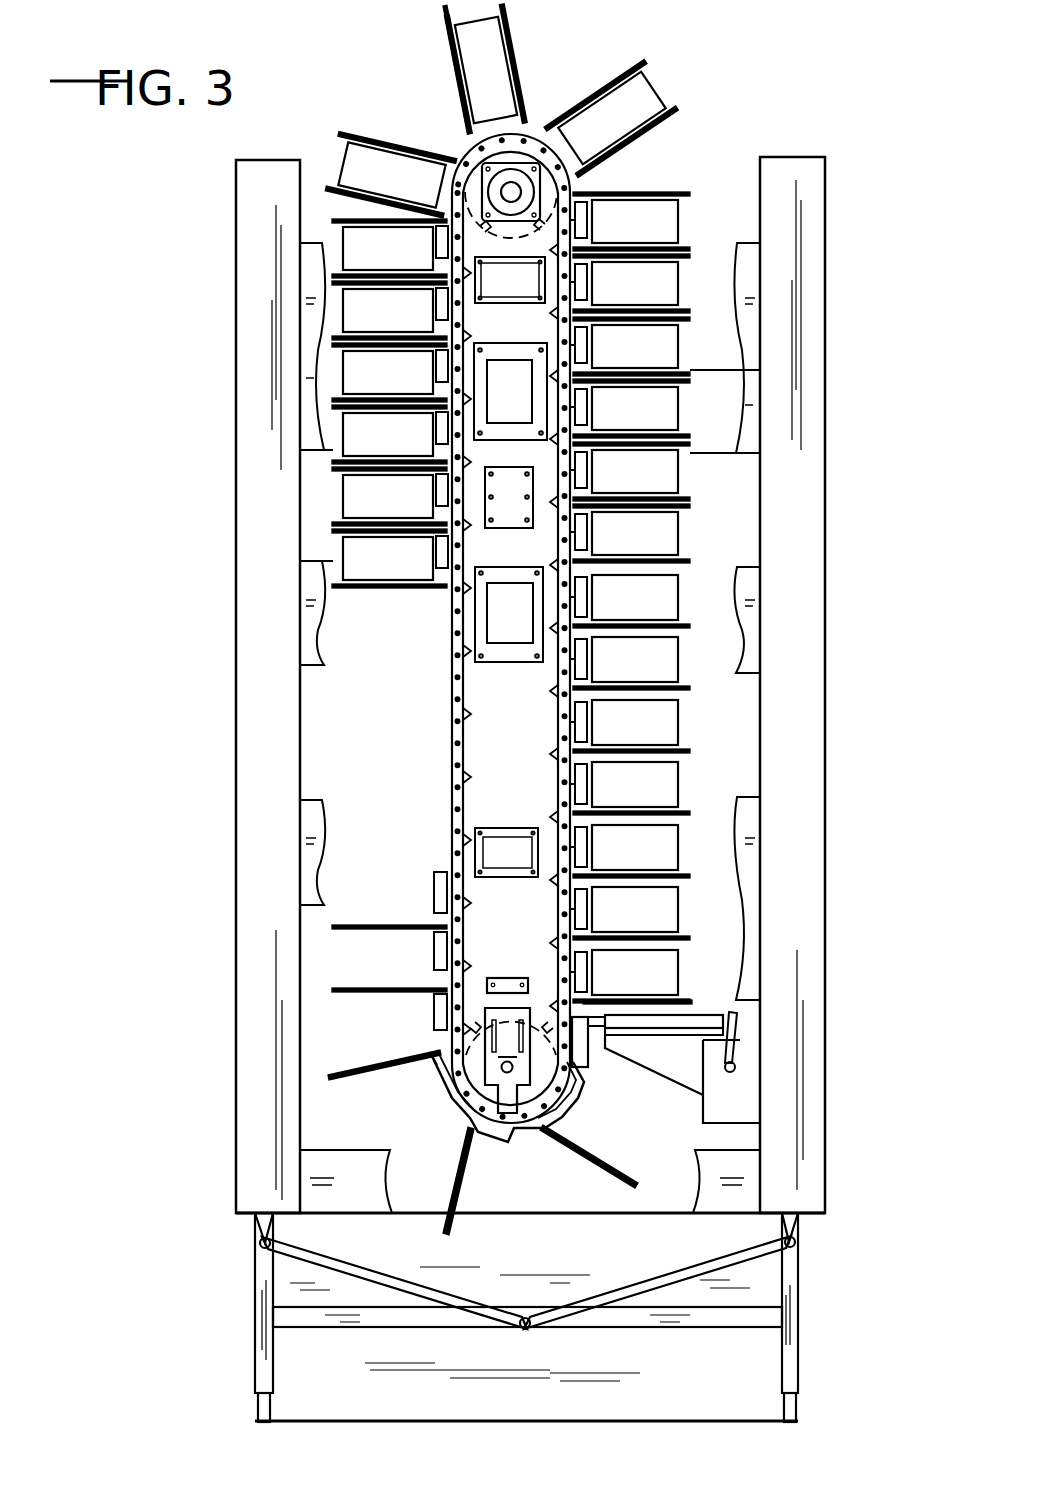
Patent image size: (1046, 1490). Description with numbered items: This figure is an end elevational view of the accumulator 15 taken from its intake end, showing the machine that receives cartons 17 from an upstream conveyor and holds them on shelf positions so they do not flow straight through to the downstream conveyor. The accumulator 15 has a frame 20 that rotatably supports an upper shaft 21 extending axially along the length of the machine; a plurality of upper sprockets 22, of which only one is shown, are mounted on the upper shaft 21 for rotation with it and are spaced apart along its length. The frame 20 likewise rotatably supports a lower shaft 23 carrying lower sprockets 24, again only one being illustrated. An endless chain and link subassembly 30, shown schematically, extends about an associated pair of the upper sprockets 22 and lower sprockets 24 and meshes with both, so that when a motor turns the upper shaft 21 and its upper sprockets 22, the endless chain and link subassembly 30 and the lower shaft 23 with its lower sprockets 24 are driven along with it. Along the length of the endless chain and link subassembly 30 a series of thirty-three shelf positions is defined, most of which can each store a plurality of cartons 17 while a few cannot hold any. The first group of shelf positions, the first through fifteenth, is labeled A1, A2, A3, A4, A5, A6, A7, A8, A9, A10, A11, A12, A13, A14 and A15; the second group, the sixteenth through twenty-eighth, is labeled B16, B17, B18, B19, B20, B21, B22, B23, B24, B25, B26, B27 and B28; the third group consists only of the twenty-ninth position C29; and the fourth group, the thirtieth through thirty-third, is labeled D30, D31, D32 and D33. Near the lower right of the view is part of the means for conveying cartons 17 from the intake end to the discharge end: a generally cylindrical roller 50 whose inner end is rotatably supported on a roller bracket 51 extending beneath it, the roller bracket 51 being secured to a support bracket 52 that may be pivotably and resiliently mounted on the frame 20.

The accumulator 15 is at (792, 112).
The cartons 17 is at (540, 393).
The frame 20 is at (797, 207).
The upper shaft 21 is at (512, 192).
The upper sprockets 22 is at (468, 142).
The lower shaft 23 is at (503, 1072).
The lower sprockets 24 is at (465, 1117).
The endless chain and link subassembly 30 is at (640, 162).
The rollers 50 is at (717, 1012).
The roller bracket 51 is at (673, 1057).
The support bracket 52 is at (740, 1095).
The shelf position A1 is at (390, 558).
The shelf position A2 is at (390, 496).
The shelf position A3 is at (390, 434).
The shelf position A4 is at (390, 372).
The shelf position A5 is at (390, 310).
The shelf position A6 is at (390, 248).
The shelf position A7 is at (391, 174).
The shelf position A8 is at (485, 67).
The shelf position A9 is at (611, 118).
The shelf position A10 is at (630, 221).
The shelf position A11 is at (630, 283).
The shelf position A12 is at (630, 346).
The shelf position A13 is at (630, 408).
The shelf position A14 is at (630, 471).
The shelf position A15 is at (630, 533).
The shelf position B16 is at (630, 601).
The shelf position B17 is at (630, 663).
The shelf position B18 is at (630, 726).
The shelf position B19 is at (630, 788).
The shelf position B20 is at (630, 851).
The shelf position B21 is at (630, 913).
The shelf position B22 is at (630, 976).
The shelf position B23 is at (658, 1007).
The shelf position B24 is at (549, 1173).
The shelf position B25 is at (560, 1162).
The shelf position B26 is at (384, 1081).
The shelf position B27 is at (389, 1018).
The shelf position B28 is at (389, 952).
The shelf position C29 is at (397, 892).
The shelf position D30 is at (376, 822).
The shelf position D31 is at (376, 758).
The shelf position D32 is at (376, 687).
The shelf position D33 is at (376, 622).